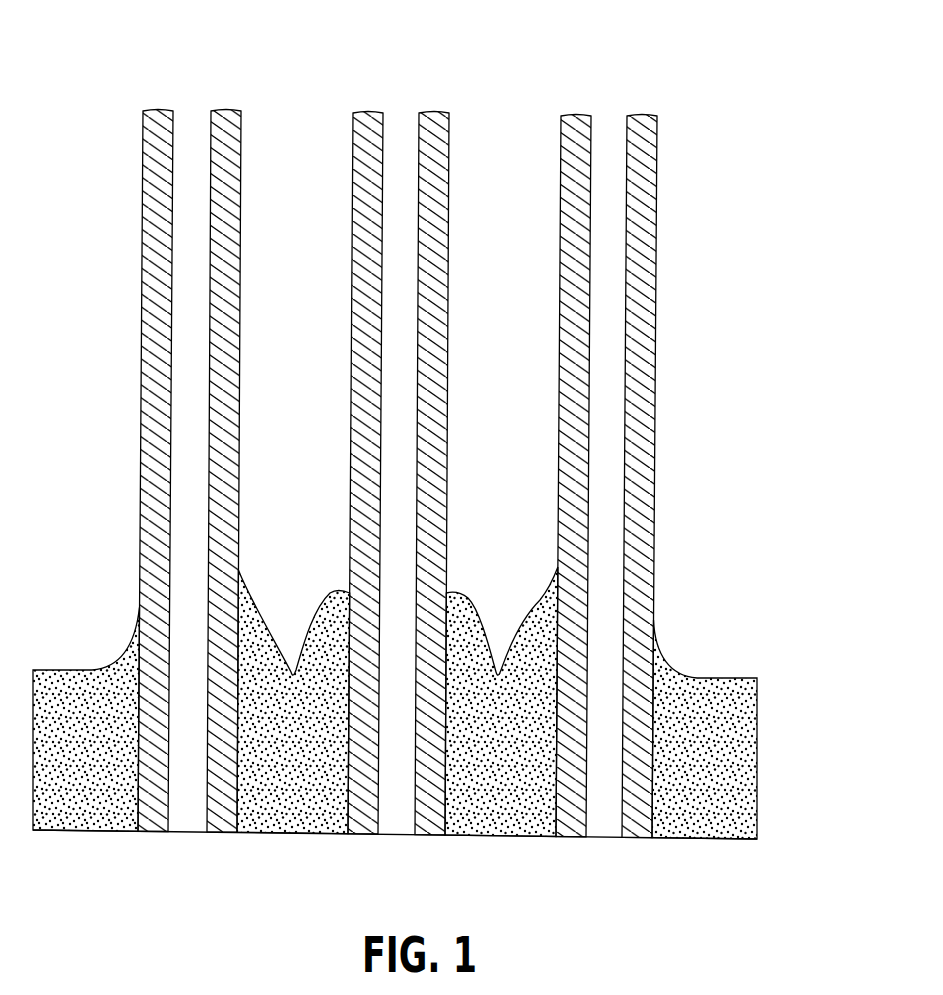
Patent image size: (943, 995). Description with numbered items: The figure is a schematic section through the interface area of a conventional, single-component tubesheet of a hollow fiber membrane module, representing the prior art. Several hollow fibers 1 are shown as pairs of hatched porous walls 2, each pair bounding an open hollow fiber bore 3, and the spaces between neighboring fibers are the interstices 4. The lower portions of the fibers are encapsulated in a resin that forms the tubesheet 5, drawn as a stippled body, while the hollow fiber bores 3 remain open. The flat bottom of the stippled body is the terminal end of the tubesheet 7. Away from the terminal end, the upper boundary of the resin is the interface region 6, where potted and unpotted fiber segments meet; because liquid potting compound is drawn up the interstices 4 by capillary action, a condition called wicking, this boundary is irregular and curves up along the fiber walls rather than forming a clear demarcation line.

The hollow fiber 1 is at (642, 107).
The porous wall 2 is at (352, 158).
The hollow fiber bore 3 is at (192, 155).
The interstice 4 is at (500, 238).
The tubesheet 5 is at (758, 710).
The interface region 6 is at (335, 592).
The terminal end of the tubesheet 7 is at (675, 839).